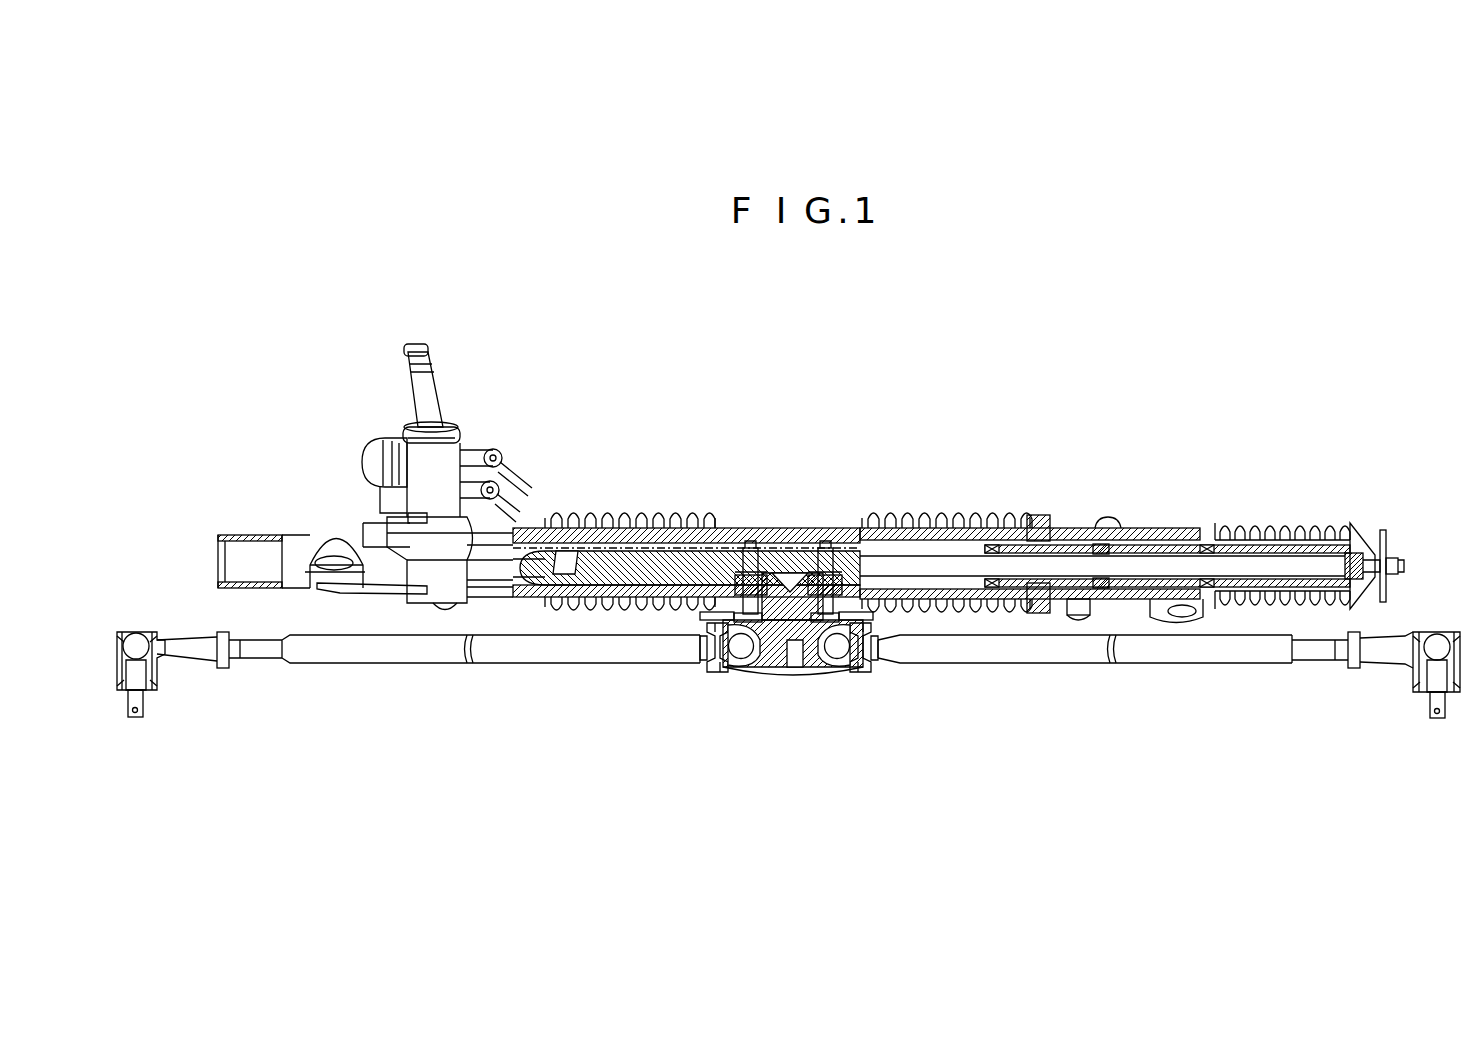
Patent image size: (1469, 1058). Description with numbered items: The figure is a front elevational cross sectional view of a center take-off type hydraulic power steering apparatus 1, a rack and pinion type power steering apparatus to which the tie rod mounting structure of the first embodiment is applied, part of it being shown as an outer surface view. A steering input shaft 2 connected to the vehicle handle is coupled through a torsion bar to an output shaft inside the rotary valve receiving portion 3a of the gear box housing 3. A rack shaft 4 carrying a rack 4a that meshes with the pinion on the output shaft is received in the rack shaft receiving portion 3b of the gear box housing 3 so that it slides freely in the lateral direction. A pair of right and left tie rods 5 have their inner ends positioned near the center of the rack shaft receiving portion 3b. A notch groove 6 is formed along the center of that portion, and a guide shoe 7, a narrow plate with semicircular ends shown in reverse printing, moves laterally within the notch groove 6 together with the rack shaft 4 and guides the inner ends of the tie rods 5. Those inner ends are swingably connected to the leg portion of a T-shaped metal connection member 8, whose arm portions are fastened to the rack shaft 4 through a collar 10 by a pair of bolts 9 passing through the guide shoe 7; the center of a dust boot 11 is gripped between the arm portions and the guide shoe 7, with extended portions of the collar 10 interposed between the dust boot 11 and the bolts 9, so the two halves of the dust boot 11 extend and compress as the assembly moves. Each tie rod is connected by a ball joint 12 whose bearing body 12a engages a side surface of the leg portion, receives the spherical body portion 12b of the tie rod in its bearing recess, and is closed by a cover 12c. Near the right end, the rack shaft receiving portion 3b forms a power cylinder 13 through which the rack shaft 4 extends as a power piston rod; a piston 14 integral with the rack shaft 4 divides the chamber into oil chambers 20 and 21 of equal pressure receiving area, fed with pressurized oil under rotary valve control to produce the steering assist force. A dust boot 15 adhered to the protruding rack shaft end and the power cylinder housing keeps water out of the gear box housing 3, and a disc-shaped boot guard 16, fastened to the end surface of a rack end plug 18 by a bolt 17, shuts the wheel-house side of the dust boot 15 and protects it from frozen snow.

The center take-off type hydraulic power steering apparatus 1 is at (918, 377).
The steering input shaft 2 is at (436, 392).
The gear box housing 3 is at (523, 513).
The rotary valve receiving portion 3a is at (414, 495).
The rack shaft receiving portion 3b is at (796, 552).
The rack shaft 4 is at (642, 548).
The rack 4a is at (536, 600).
The tie rods 5 is at (416, 656).
The notch groove 6 is at (688, 600).
The guide shoe 7 is at (790, 560).
The connection member 8 is at (789, 672).
The bolts 9 is at (749, 557).
The collar 10 is at (703, 552).
The dust boot 11 is at (962, 520).
The ball joint 12 is at (714, 696).
The bearing body 12a is at (748, 672).
The spherical body portion 12b is at (737, 658).
The cover 12c is at (719, 690).
The power cylinder 13 is at (1145, 530).
The piston 14 is at (1100, 538).
The dust boot 15 is at (1276, 522).
The boot guard 16 is at (1385, 538).
The bolt 17 is at (1398, 566).
The rack end plug 18 is at (1344, 530).
The oil chamber 20 is at (1058, 540).
The oil chamber 21 is at (1178, 547).